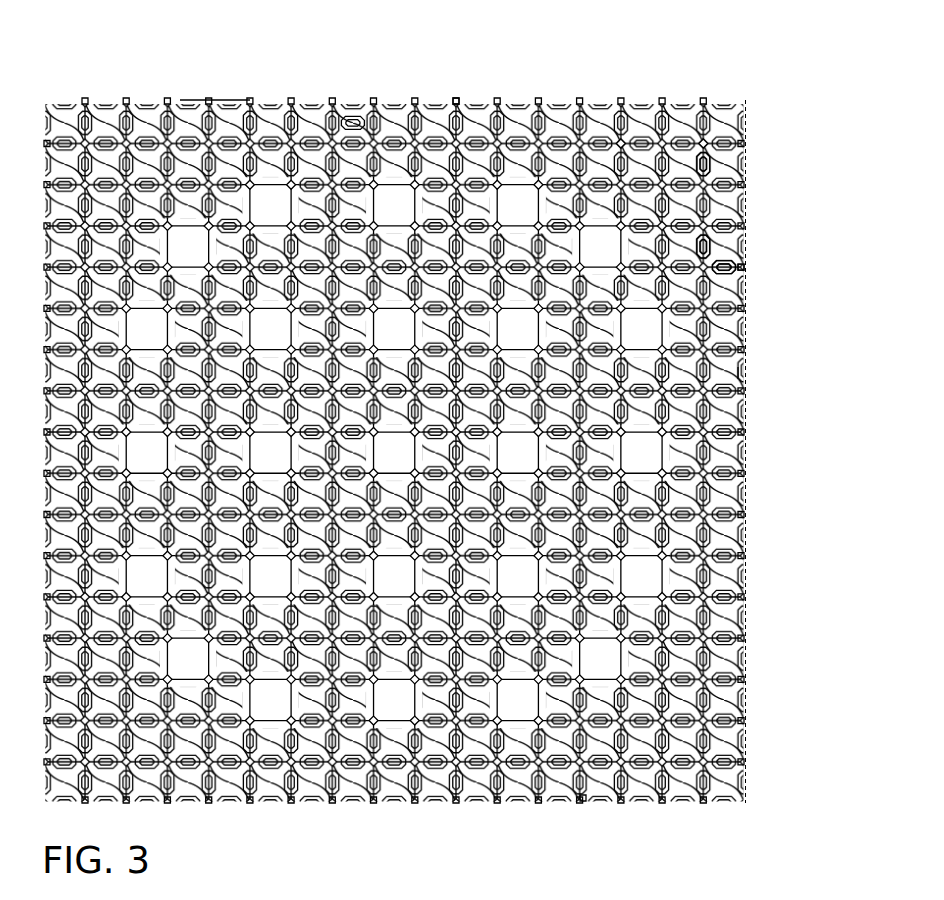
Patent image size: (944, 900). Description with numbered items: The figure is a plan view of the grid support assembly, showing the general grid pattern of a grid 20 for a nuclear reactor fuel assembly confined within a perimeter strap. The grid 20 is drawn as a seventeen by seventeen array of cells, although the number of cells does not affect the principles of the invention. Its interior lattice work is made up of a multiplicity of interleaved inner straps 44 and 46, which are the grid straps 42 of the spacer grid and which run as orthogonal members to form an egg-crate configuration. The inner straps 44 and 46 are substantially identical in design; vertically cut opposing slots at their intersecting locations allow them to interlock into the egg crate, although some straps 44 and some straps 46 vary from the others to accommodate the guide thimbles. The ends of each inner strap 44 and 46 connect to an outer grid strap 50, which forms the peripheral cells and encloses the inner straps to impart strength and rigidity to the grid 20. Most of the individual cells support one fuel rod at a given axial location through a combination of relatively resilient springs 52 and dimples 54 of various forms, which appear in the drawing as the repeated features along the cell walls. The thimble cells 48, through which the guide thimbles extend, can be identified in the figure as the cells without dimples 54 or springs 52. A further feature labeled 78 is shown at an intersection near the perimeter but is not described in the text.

The grid 20 is at (562, 76).
The grid straps 42 is at (231, 92).
The inner strap 44 is at (347, 100).
The inner strap 46 is at (735, 376).
The thimble cell 48 is at (533, 589).
The outer grid strap 50 is at (458, 99).
The spring 52 is at (710, 247).
The dimple 54 is at (736, 263).
The node connector 78 is at (706, 139).